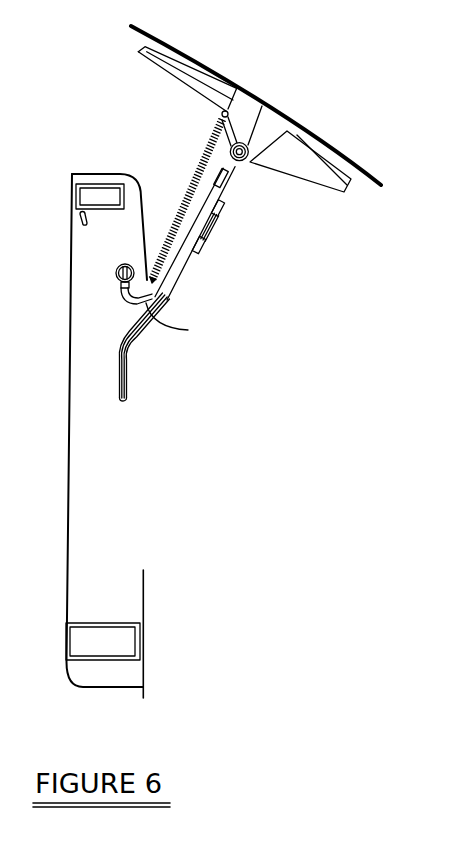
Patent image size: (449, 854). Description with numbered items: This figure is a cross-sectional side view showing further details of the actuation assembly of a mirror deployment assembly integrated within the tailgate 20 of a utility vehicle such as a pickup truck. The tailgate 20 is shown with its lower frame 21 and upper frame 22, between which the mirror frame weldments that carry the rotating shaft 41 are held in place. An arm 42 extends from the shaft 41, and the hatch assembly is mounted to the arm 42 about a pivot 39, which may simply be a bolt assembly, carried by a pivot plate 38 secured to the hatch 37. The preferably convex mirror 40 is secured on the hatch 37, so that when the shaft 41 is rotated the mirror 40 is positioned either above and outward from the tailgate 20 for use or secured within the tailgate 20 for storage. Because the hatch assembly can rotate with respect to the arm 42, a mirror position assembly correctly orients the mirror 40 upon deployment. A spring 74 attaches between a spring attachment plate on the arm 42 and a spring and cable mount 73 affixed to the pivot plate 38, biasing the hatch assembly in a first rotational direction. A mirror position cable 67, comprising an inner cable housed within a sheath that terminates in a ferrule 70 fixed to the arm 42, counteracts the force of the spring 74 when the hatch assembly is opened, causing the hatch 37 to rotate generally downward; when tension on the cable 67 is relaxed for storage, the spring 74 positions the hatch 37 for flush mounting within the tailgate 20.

The tailgate 20 is at (93, 167).
The lower frame 21 is at (135, 637).
The upper frame 22 is at (76, 193).
The hatch 37 is at (368, 172).
The pivot plate 38 is at (243, 100).
The pivot 39 is at (254, 147).
The mirror 40 is at (310, 182).
The rotating shaft 41 is at (115, 272).
The arm 42 is at (224, 187).
The mirror position cable 67 is at (168, 298).
The ferrule 70 is at (222, 216).
The spring and cable mount 73 is at (221, 113).
The spring 74 is at (192, 190).